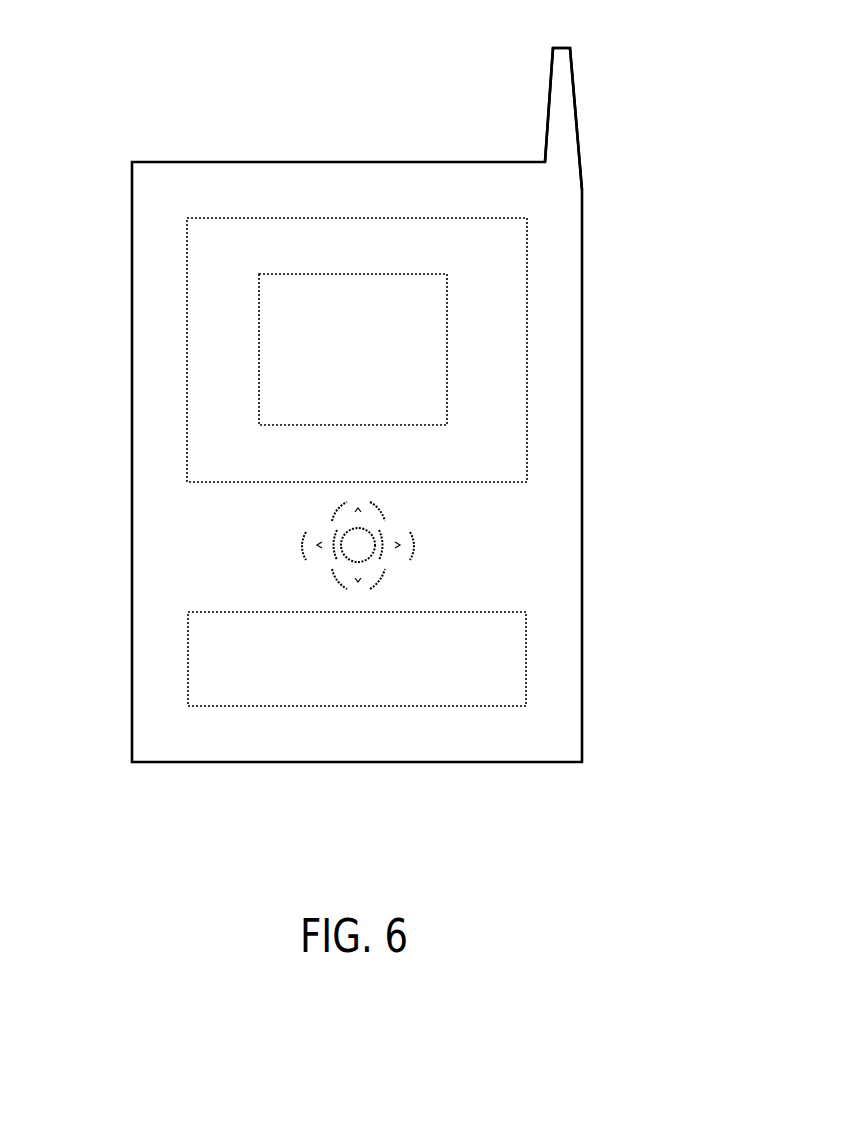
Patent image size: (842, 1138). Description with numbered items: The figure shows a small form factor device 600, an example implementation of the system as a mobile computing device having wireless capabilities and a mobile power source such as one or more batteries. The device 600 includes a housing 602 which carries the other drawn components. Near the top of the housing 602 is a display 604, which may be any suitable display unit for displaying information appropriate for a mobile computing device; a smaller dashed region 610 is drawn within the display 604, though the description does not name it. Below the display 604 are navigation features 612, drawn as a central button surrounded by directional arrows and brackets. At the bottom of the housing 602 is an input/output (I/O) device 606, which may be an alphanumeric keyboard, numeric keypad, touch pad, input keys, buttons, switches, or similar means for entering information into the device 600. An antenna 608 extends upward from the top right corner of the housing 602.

The small form factor device 600 is at (150, 67).
The housing 602 is at (583, 462).
The display 604 is at (527, 235).
The input/output (I/O) device 606 is at (527, 648).
The antenna 608 is at (547, 97).
The display window 610 is at (448, 367).
The navigation features 612 is at (428, 535).